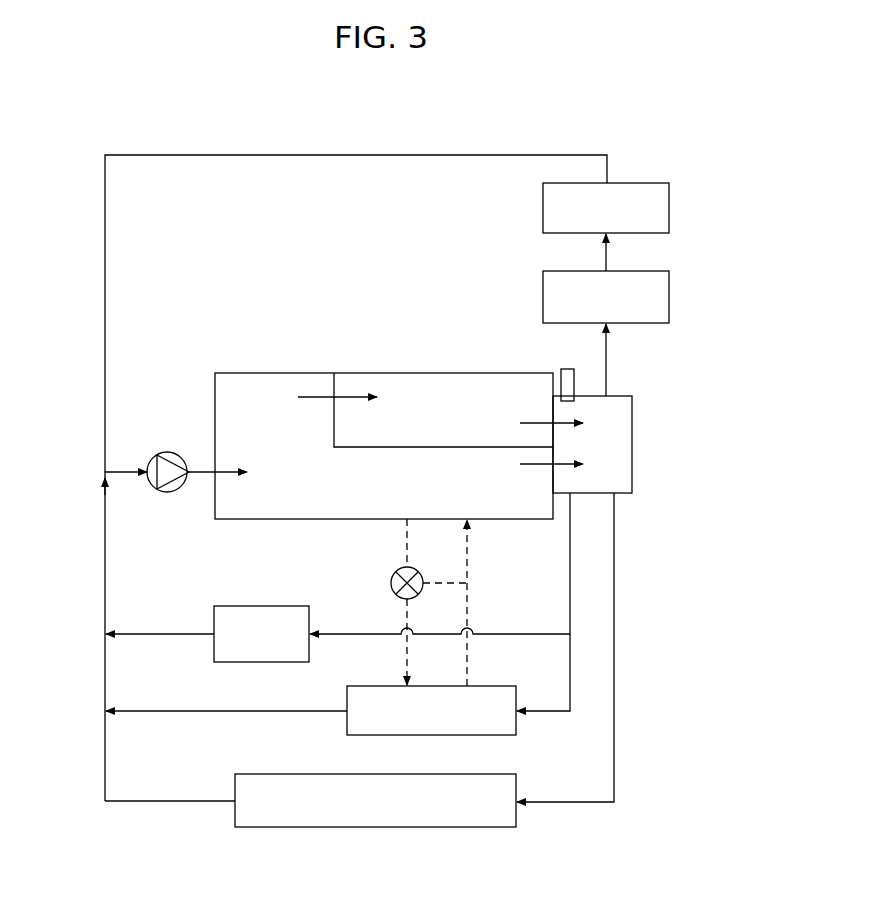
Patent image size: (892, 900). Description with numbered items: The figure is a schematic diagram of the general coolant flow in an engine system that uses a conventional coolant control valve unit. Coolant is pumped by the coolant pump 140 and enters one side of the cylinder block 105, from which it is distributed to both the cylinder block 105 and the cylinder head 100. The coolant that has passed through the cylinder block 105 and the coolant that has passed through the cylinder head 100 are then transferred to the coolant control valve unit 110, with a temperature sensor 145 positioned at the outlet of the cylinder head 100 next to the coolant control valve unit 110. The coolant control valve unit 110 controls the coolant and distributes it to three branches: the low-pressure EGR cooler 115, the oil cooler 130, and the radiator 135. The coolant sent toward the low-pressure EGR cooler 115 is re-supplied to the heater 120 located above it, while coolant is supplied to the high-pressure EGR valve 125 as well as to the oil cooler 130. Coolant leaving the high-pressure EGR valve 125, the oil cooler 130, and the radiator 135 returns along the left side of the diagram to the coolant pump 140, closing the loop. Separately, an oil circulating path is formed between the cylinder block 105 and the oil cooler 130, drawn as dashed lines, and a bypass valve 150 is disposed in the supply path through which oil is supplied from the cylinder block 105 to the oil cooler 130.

The cylinder head 100 is at (411, 403).
The cylinder block 105 is at (256, 403).
The coolant control valve unit 110 is at (632, 465).
The low-pressure EGR cooler 115 is at (669, 297).
The heater 120 is at (669, 209).
The high-pressure EGR valve 125 is at (230, 606).
The oil cooler 130 is at (347, 735).
The radiator 135 is at (462, 827).
The coolant pump 140 is at (166, 453).
The temperature sensor 145 is at (561, 371).
The bypass valve 150 is at (395, 572).